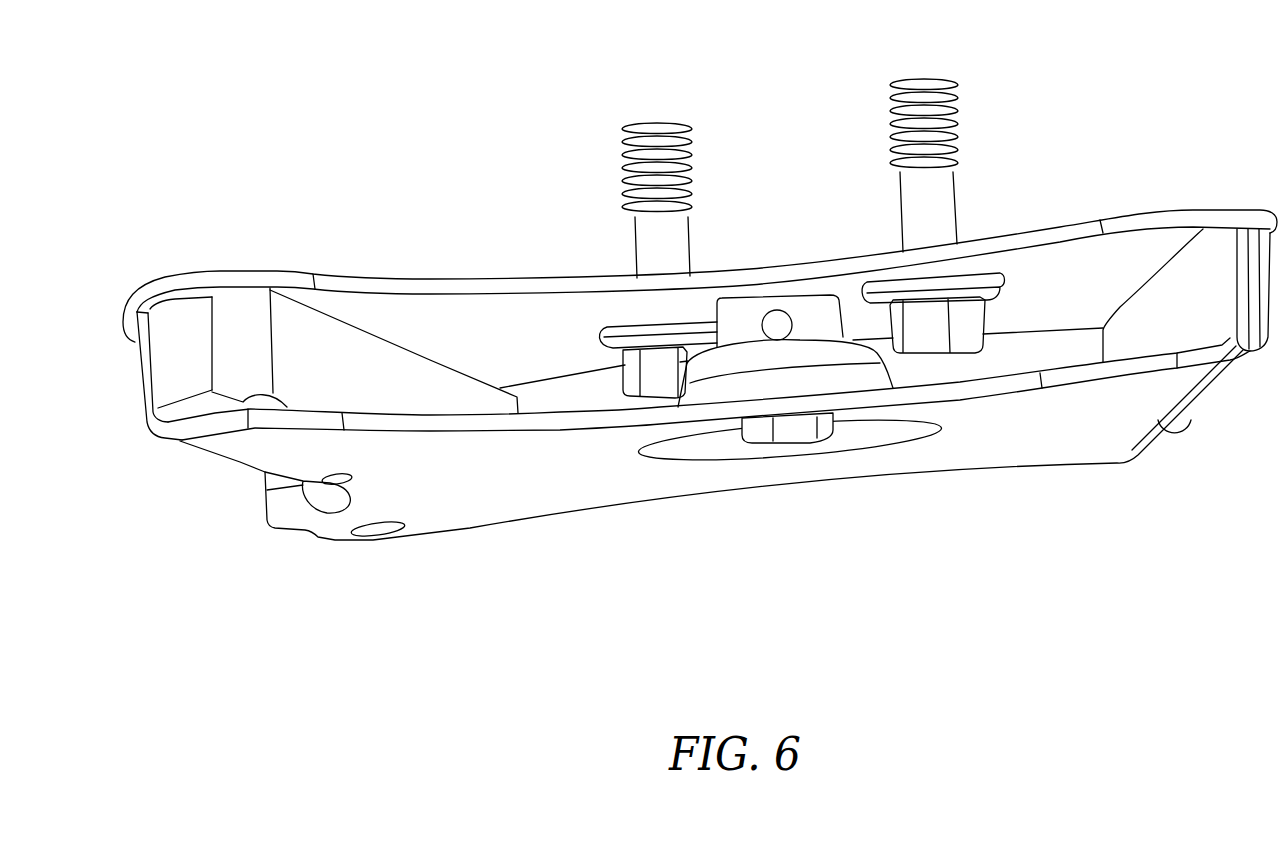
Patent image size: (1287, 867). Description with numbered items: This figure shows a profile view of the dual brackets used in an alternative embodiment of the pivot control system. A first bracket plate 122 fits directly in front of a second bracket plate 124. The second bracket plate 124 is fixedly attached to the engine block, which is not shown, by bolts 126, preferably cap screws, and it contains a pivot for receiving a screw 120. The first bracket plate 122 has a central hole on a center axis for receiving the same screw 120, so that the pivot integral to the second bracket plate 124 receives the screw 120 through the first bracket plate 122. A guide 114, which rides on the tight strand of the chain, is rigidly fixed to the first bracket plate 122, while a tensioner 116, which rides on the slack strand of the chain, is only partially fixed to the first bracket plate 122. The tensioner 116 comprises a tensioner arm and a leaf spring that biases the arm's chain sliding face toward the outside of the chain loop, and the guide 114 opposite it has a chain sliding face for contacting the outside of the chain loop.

The guide 114 is at (1180, 275).
The tensioner 116 is at (250, 303).
The screw 120 is at (810, 440).
The first bracket plate 122 is at (470, 495).
The second bracket plate 124 is at (405, 283).
The bolts 126 is at (890, 112).